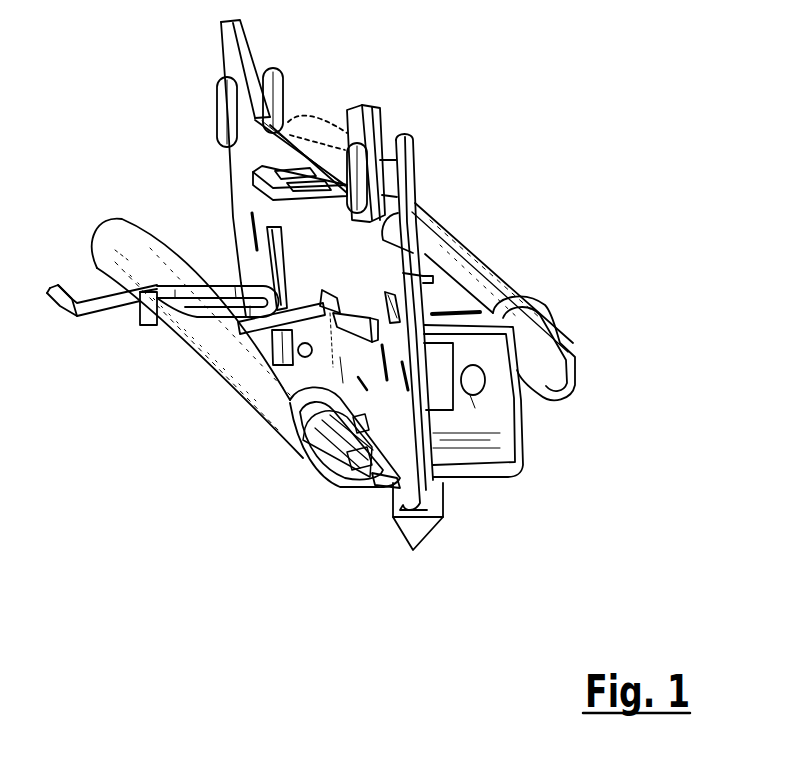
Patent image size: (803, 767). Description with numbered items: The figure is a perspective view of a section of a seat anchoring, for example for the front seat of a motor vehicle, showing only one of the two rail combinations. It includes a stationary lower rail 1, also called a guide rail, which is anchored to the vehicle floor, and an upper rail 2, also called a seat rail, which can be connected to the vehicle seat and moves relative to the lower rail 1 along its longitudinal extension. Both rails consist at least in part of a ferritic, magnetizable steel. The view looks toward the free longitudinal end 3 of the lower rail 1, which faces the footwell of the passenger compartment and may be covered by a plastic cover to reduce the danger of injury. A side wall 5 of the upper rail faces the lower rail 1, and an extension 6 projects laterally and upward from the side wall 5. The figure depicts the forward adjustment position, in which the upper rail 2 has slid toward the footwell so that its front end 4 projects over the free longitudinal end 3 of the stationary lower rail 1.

The lower rail 1 is at (520, 277).
The upper rail 2 is at (437, 212).
The free longitudinal end 3 is at (340, 487).
The front end 4 is at (432, 419).
The side wall 5 is at (277, 433).
The extension 6 is at (373, 490).